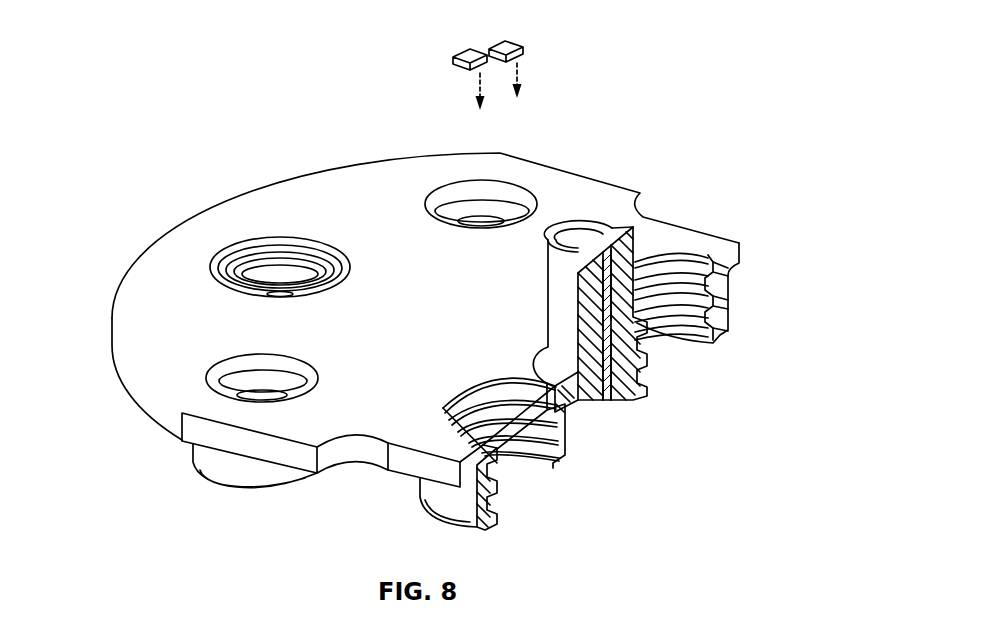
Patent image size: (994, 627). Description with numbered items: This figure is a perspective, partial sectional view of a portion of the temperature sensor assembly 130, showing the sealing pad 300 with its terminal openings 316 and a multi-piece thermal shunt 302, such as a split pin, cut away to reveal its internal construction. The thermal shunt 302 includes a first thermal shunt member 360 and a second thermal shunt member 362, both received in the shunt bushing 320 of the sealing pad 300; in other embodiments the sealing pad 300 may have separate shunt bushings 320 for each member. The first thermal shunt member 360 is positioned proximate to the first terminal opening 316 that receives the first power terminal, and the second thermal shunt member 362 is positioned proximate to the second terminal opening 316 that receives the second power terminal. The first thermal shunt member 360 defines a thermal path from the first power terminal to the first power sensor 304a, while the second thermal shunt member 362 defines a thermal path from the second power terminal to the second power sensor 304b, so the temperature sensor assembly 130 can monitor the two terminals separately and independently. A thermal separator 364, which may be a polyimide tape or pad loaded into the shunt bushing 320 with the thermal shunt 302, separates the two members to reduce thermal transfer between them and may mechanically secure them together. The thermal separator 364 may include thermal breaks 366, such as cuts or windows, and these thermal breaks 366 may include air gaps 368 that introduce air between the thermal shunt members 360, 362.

The temperature sensor assembly 130 is at (200, 132).
The sealing pad 300 is at (150, 290).
The thermal shunt 302 is at (582, 215).
The first power sensor 304a is at (467, 50).
The second power sensor 304b is at (505, 42).
The terminal opening 316 is at (697, 352).
The shunt bushing 320 is at (625, 278).
The first thermal shunt member 360 is at (562, 245).
The second thermal shunt member 362 is at (638, 237).
The thermal separator 364 is at (632, 352).
The thermal breaks 366 is at (625, 318).
The air gaps 368 is at (742, 251).